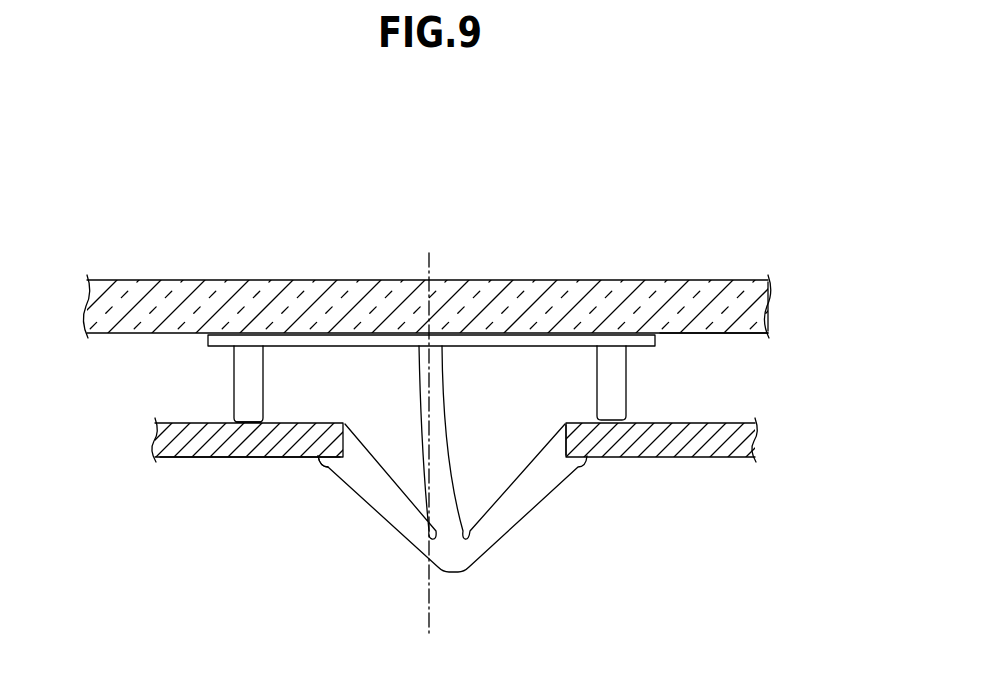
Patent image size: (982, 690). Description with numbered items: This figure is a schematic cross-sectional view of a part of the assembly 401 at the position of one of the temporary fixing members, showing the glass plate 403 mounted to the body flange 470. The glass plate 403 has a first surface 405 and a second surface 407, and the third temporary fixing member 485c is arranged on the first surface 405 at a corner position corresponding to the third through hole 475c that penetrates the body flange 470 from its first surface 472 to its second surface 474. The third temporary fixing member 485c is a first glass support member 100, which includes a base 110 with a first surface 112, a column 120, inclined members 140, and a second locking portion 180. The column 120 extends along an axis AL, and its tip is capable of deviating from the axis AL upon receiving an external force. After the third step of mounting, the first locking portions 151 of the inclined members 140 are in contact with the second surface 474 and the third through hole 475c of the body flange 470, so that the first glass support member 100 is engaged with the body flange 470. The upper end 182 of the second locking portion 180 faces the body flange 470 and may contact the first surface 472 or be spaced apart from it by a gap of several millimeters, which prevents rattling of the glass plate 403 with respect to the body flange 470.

The assembly 401 is at (648, 144).
The glass plate 403 is at (770, 306).
The first surface of the glass plate 405 is at (677, 337).
The second surface of the glass plate 407 is at (672, 278).
The first surface of the base 112 is at (331, 331).
The second locking portion 180 is at (243, 383).
The upper end of the second locking portion 182 is at (246, 428).
The base 110 is at (423, 328).
The column 120 is at (455, 377).
The axis AL is at (430, 612).
The first surface of the body flange 472 is at (177, 420).
The second surface of the body flange 474 is at (204, 459).
The body flange 470 is at (757, 442).
The third through hole 475c is at (570, 440).
The inclined members 140 is at (386, 519).
The first locking portions 151 is at (319, 458).
The third temporary fixing member 485c is at (475, 537).
The first glass support member 100 is at (475, 537).